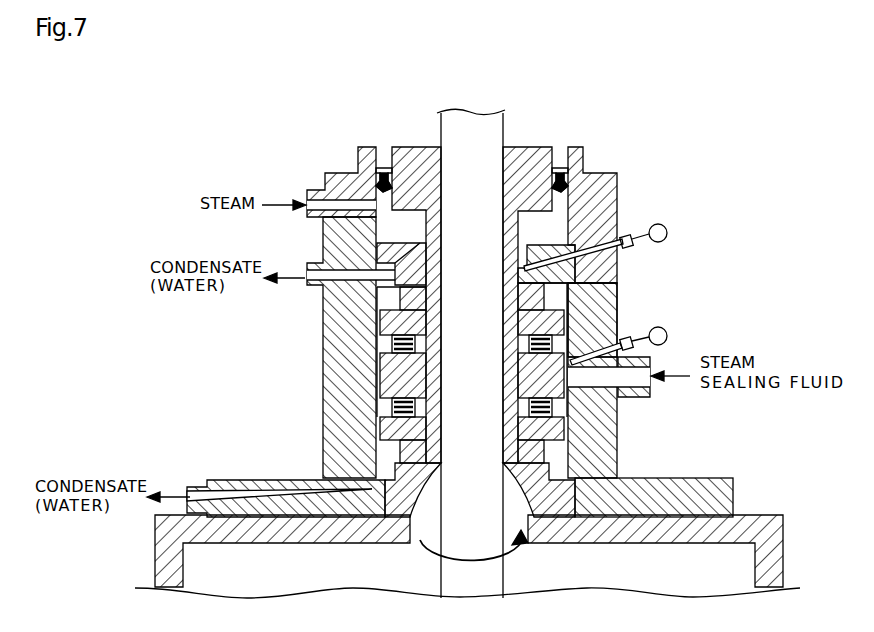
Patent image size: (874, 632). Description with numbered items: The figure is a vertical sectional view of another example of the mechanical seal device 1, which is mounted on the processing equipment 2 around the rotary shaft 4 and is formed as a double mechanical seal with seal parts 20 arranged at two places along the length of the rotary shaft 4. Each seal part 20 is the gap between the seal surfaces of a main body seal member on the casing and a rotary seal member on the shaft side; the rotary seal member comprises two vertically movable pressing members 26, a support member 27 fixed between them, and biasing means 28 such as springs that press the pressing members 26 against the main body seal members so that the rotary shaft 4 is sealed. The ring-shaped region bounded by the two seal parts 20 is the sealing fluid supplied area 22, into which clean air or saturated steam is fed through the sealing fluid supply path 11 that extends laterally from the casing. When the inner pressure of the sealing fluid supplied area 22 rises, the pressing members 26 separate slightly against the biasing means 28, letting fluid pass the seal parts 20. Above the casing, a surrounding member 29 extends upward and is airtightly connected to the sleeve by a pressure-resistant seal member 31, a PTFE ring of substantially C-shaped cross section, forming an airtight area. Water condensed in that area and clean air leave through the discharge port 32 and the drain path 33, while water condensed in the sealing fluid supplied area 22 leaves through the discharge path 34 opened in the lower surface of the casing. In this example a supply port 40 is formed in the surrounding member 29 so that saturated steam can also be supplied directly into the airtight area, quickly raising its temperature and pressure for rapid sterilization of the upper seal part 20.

The mechanical seal device 1 is at (704, 152).
The processing equipment 2 is at (757, 515).
The rotary shaft 4 is at (506, 131).
The sealing fluid supply path 11 is at (650, 397).
The seal part 20 is at (606, 272).
The sealing fluid supplied area 22 is at (380, 368).
The pressing member 26 is at (392, 437).
The support member 27 is at (402, 388).
The biasing means 28 is at (612, 308).
The surrounding member 29 is at (619, 195).
The pressure-resistant seal member 31 is at (386, 168).
The discharge port 32 is at (380, 246).
The drain path 33 is at (312, 290).
The discharge path 34 is at (192, 487).
The supply port 40 is at (382, 200).